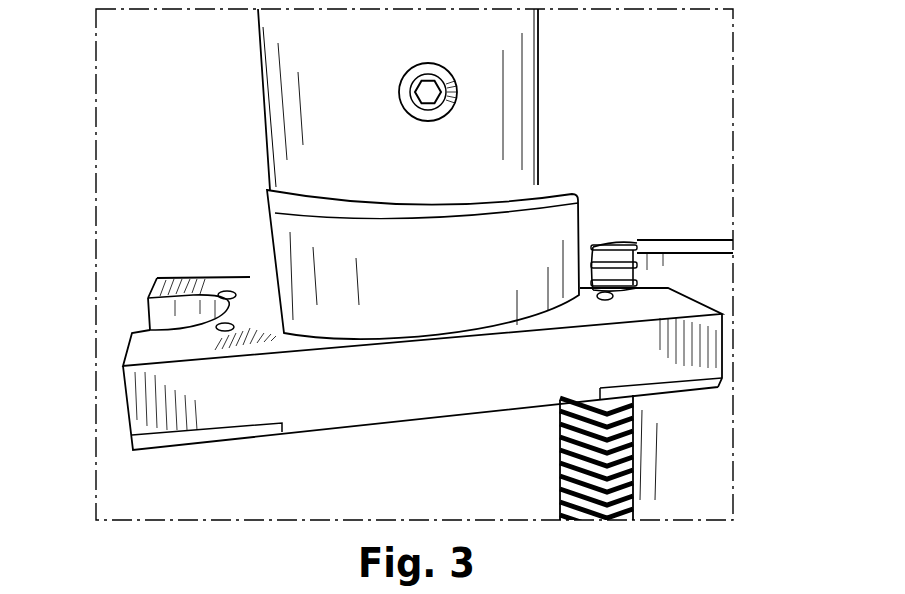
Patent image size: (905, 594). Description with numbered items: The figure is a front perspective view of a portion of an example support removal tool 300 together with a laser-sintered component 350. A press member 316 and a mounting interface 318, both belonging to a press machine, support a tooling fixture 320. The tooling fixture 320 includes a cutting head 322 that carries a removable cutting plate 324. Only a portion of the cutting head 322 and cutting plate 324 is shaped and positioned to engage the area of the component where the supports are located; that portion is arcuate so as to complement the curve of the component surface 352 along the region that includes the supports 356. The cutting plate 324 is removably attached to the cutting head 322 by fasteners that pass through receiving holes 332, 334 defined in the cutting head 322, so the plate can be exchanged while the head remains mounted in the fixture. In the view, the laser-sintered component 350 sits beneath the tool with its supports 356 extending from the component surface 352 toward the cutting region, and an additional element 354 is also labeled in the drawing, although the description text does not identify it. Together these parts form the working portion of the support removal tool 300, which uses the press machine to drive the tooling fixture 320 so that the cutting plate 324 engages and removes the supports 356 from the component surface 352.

The support removal tool 300 is at (583, 118).
The press member 316 is at (277, 110).
The mounting interface 318 is at (272, 248).
The tooling fixture 320 is at (110, 316).
The cutting head 322 is at (315, 412).
The removable cutting plate 324 is at (708, 385).
The receiving hole 332 is at (585, 262).
The receiving hole 334 is at (613, 297).
The laser-sintered component 350 is at (762, 263).
The component surface 352 is at (627, 270).
The block 354 is at (712, 468).
The supports 356 is at (550, 513).